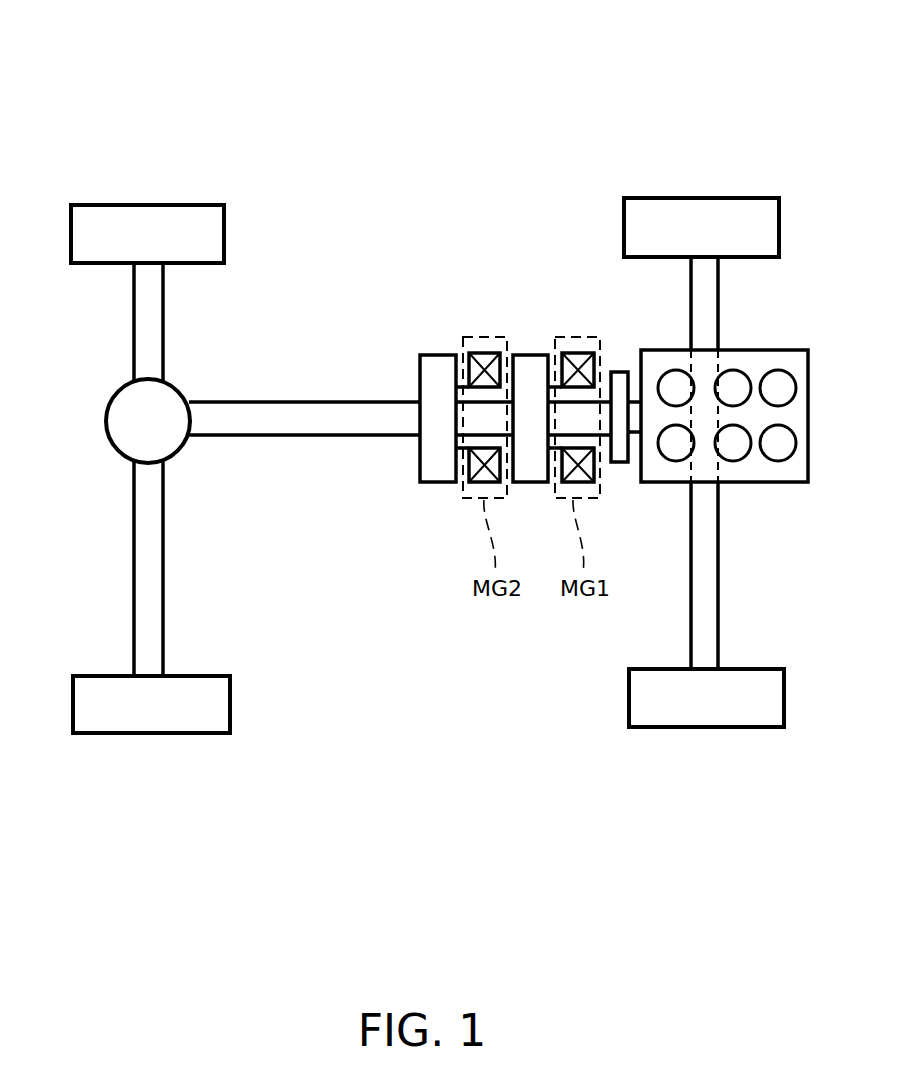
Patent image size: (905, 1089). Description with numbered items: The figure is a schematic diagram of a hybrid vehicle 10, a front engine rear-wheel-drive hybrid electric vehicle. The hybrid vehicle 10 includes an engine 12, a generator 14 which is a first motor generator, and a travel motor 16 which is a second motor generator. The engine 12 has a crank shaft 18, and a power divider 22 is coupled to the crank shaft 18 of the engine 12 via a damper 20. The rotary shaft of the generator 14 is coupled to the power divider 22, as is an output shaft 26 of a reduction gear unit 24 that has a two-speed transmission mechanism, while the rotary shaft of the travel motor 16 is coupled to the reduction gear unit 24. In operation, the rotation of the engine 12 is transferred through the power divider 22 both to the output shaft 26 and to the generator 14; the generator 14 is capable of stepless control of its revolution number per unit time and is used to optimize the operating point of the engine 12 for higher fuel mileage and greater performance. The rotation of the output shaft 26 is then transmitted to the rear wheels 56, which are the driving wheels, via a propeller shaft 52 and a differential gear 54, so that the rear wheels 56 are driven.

The hybrid vehicle 10 is at (503, 143).
The engine 12 is at (782, 349).
The generator 14 is at (577, 337).
The travel motor 16 is at (487, 337).
The crank shaft 18 is at (634, 398).
The damper 20 is at (620, 465).
The power divider 22 is at (533, 355).
The reduction gear unit 24 is at (437, 355).
The output shaft 26 is at (480, 413).
The propeller shaft 52 is at (233, 418).
The differential gear 54 is at (107, 442).
The rear wheels 56 is at (147, 203).